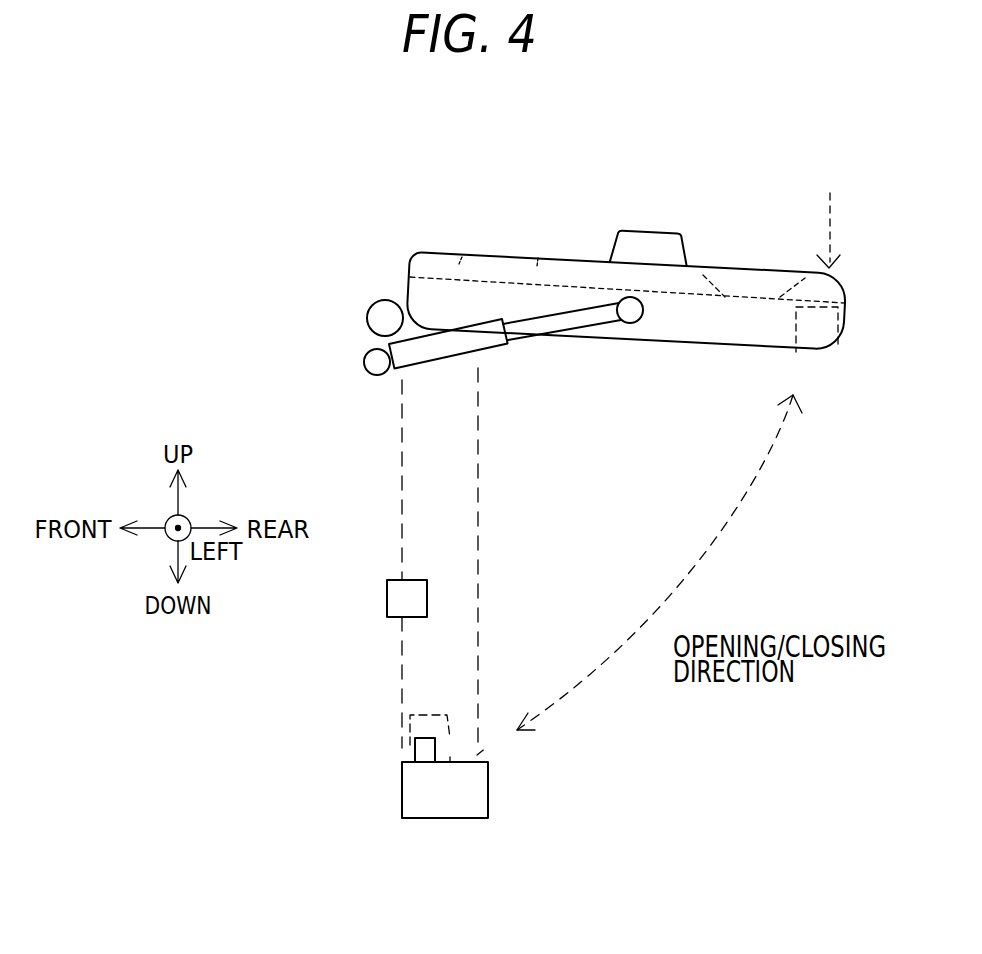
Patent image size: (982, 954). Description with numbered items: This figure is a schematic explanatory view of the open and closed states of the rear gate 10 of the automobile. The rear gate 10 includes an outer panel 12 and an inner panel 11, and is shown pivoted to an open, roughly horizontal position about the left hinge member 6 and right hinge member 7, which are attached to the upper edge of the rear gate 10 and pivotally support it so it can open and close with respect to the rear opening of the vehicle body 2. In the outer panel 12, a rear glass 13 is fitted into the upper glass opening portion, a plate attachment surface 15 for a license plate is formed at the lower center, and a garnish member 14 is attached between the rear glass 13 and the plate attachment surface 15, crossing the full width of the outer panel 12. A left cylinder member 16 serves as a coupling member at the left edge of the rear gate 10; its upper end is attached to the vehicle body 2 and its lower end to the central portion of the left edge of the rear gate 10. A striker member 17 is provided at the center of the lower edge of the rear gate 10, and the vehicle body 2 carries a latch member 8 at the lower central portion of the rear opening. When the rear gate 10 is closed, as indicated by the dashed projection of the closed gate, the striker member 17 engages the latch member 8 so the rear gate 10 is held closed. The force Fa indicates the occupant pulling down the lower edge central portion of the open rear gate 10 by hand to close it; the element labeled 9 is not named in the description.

The vehicle body 2 is at (402, 795).
The left hinge member 6 is at (382, 317).
The right hinge member 7 is at (369, 283).
The latch member 8 is at (417, 740).
The latch 9 is at (387, 589).
The rear gate 10 is at (350, 342).
The inner panel 11 is at (702, 341).
The outer panel 12 is at (447, 262).
The rear glass 13 is at (537, 258).
The garnish member 14 is at (663, 240).
The plate attachment surface 15 is at (753, 290).
The left cylinder member 16 is at (484, 348).
The striker member 17 is at (802, 353).
The force Fa is at (831, 216).